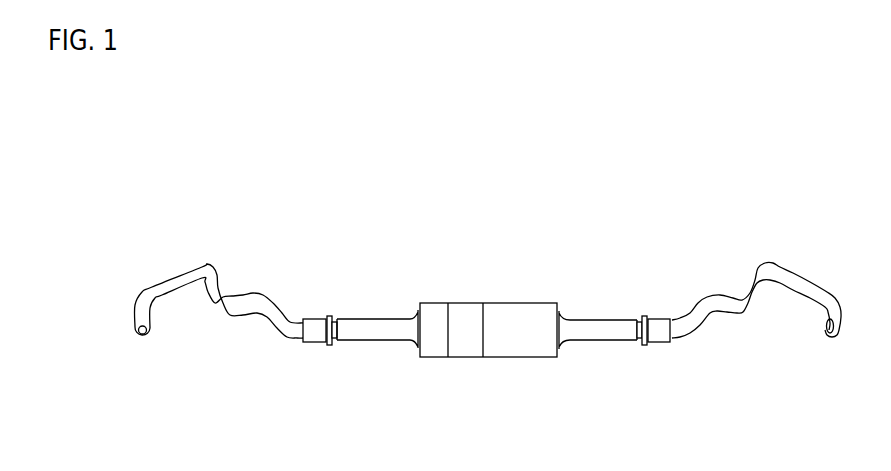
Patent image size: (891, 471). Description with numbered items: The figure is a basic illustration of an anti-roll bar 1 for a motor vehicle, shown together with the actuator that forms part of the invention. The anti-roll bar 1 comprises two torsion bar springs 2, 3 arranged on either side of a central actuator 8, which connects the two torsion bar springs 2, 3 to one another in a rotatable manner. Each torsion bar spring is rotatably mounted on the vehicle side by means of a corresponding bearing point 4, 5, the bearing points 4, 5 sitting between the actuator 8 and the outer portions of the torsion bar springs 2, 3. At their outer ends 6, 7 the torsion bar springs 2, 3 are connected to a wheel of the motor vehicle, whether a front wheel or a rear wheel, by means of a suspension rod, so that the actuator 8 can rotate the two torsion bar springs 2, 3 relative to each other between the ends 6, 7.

The anti-roll bar 1 is at (533, 162).
The torsion bar spring 2 is at (273, 337).
The torsion bar spring 3 is at (731, 317).
The bearing point 4 is at (313, 343).
The bearing point 5 is at (655, 343).
The end 6 is at (142, 343).
The end 7 is at (830, 340).
The actuator 8 is at (525, 295).